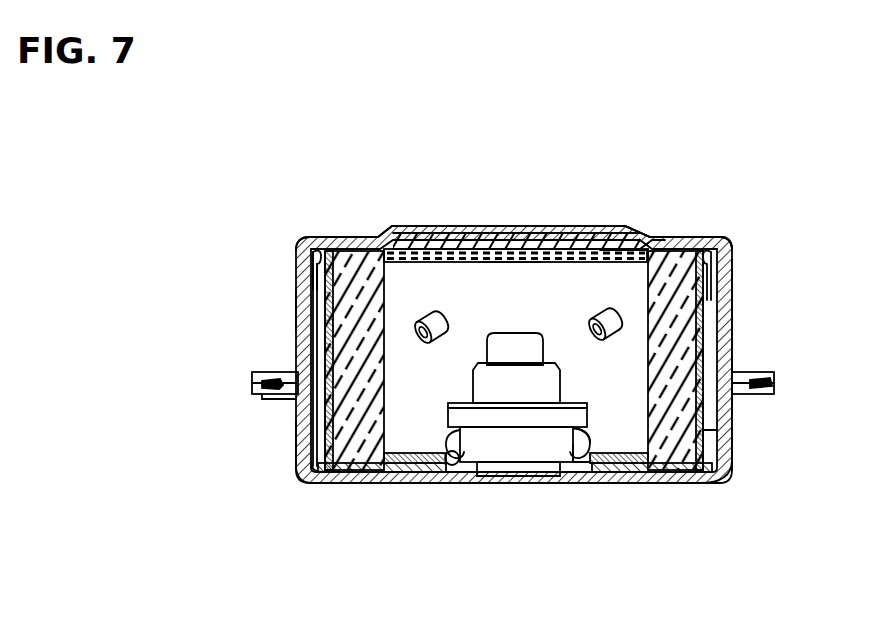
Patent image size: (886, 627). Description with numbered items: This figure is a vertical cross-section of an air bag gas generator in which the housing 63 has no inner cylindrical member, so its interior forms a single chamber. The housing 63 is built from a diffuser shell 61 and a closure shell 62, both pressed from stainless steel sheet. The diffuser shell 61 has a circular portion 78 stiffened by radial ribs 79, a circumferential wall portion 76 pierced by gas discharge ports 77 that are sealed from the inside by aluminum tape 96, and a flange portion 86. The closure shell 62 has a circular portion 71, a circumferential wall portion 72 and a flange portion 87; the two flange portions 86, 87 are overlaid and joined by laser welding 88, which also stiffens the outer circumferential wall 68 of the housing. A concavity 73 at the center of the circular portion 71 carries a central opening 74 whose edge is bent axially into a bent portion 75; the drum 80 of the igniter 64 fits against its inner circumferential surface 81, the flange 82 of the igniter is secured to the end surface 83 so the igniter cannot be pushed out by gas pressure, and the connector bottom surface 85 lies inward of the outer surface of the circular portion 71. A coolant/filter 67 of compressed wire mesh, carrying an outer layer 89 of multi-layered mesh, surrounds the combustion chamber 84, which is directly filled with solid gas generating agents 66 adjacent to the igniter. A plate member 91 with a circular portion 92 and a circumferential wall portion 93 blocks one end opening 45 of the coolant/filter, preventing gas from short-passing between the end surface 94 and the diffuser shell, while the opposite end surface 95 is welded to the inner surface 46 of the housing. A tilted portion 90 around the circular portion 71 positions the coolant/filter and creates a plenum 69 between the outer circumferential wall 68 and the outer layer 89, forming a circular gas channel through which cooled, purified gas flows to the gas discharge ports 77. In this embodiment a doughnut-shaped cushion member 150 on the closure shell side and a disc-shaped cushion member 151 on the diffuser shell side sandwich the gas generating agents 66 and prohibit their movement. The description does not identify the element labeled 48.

The end opening 45 is at (650, 235).
The inner surface of the housing 46 is at (641, 473).
The floor insulator edge 48 is at (390, 483).
The diffuser shell 61 is at (693, 224).
The closure shell 62 is at (365, 487).
The housing 63 is at (638, 194).
The igniter 64 is at (496, 484).
The solid gas generating agents 66 is at (447, 316).
The coolant/filter 67 is at (625, 480).
The outer circumferential wall 68 is at (744, 313).
The plenum 69 is at (722, 237).
The circular portion 71 is at (304, 485).
The circumferential wall portion 72 is at (296, 447).
The concavity 73 is at (440, 480).
The central opening 74 is at (460, 480).
The bent portion 75 is at (732, 410).
The circumferential wall portion 76 is at (295, 310).
The gas discharge ports 77 is at (298, 268).
The circular portion 78 is at (360, 250).
The ribs 79 is at (430, 226).
The drum 80 is at (540, 450).
The inner circumferential surface 81 is at (568, 462).
The flange 82 is at (451, 418).
The end surface 83 is at (586, 406).
The combustion chamber 84 is at (548, 264).
The connector bottom surface 85 is at (512, 478).
The flange portion 86 is at (268, 371).
The flange portion 87 is at (273, 402).
The laser welding 88 is at (256, 389).
The outer layer 89 is at (650, 432).
The tilted portion 90 is at (302, 483).
The plate member 91 is at (420, 226).
The circular portion 92 is at (590, 250).
The circumferential wall portion 93 is at (630, 240).
The end surface 94 is at (340, 236).
The end surface 95 is at (690, 483).
The aluminum tape 96 is at (317, 240).
The cushion member 150 is at (595, 423).
The cushion member 151 is at (507, 263).